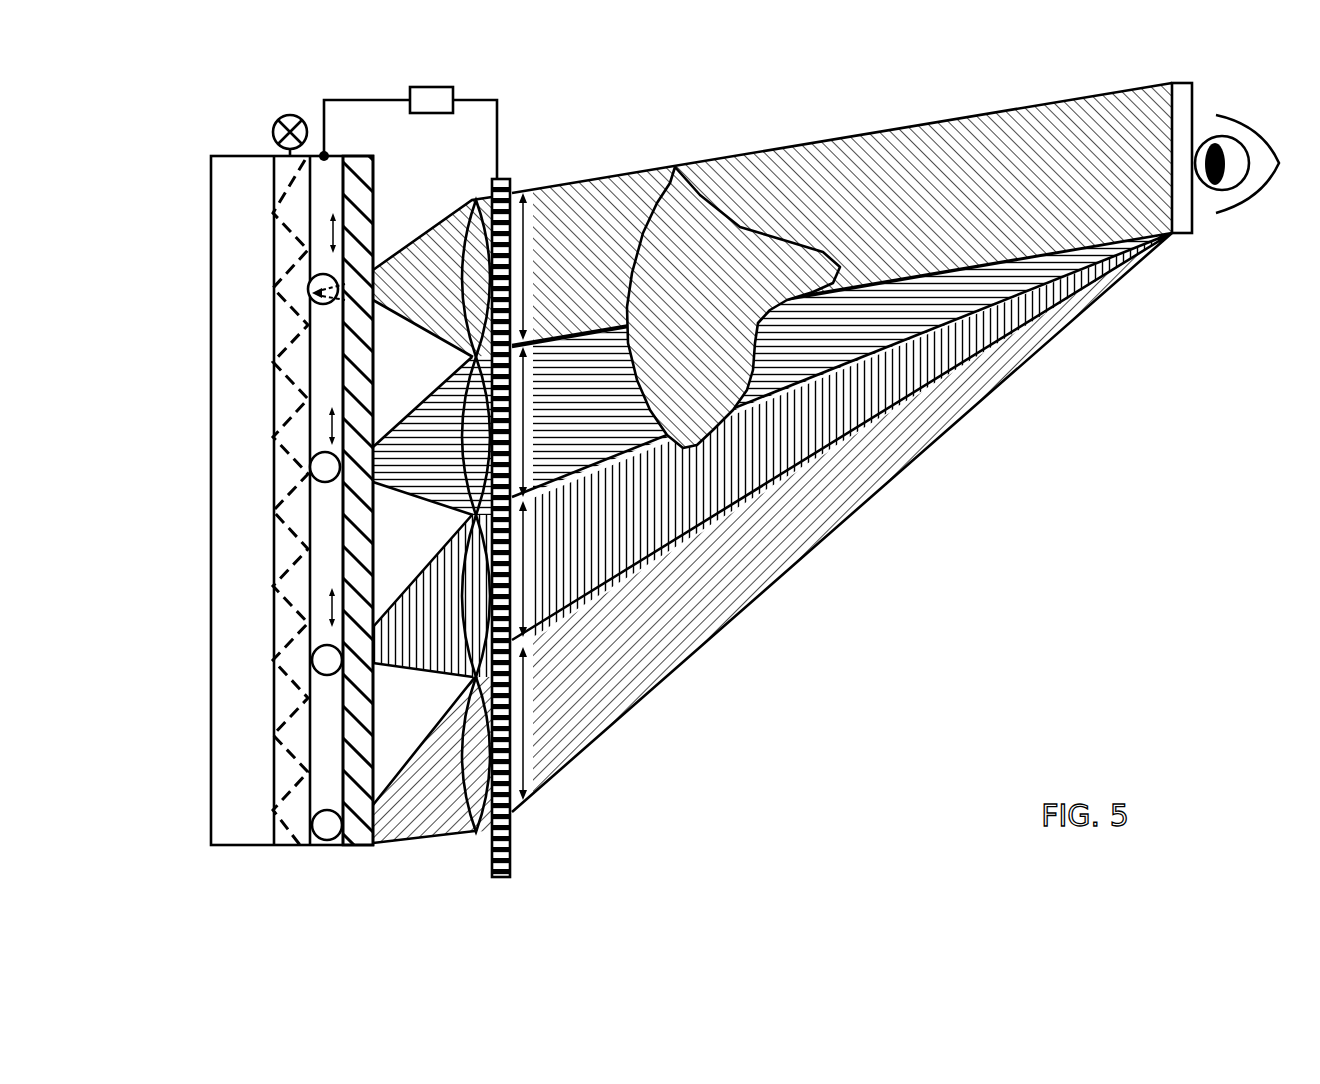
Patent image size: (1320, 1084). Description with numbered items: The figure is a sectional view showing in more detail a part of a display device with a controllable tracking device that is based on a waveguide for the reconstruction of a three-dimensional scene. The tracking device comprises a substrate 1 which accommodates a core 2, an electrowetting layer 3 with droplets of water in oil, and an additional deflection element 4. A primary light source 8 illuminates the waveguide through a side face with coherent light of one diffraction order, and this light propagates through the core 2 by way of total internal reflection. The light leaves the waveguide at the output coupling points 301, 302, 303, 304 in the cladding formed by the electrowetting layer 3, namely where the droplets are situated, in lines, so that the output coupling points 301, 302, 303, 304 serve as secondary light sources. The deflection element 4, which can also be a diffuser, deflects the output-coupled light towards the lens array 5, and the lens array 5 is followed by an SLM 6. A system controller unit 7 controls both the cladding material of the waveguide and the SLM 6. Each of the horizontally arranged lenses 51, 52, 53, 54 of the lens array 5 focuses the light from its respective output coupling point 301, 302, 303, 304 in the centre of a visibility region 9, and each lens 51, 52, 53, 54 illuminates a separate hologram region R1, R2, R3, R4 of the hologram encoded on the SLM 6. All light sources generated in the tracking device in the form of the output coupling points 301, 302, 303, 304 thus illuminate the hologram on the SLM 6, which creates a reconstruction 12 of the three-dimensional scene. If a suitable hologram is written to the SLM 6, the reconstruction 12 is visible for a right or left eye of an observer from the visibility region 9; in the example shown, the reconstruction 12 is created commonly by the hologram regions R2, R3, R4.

The substrate 1 is at (267, 842).
The core 2 is at (293, 842).
The electrowetting layer 3 is at (337, 845).
The deflection element 4 is at (368, 842).
The lens array 5 is at (436, 513).
The SLM 6 is at (505, 180).
The system controller unit 7 is at (408, 133).
The primary light source 8 is at (290, 122).
The visibility region 9 is at (1192, 217).
The reconstruction 12 is at (683, 172).
The lens 51 is at (420, 837).
The lens 52 is at (470, 618).
The lens 53 is at (470, 428).
The lens 54 is at (470, 272).
The output coupling point 301 is at (312, 293).
The output coupling point 302 is at (312, 467).
The output coupling point 303 is at (312, 660).
The output coupling point 304 is at (312, 825).
The hologram region R1 is at (527, 737).
The hologram region R2 is at (527, 587).
The hologram region R3 is at (523, 428).
The hologram region R4 is at (522, 232).